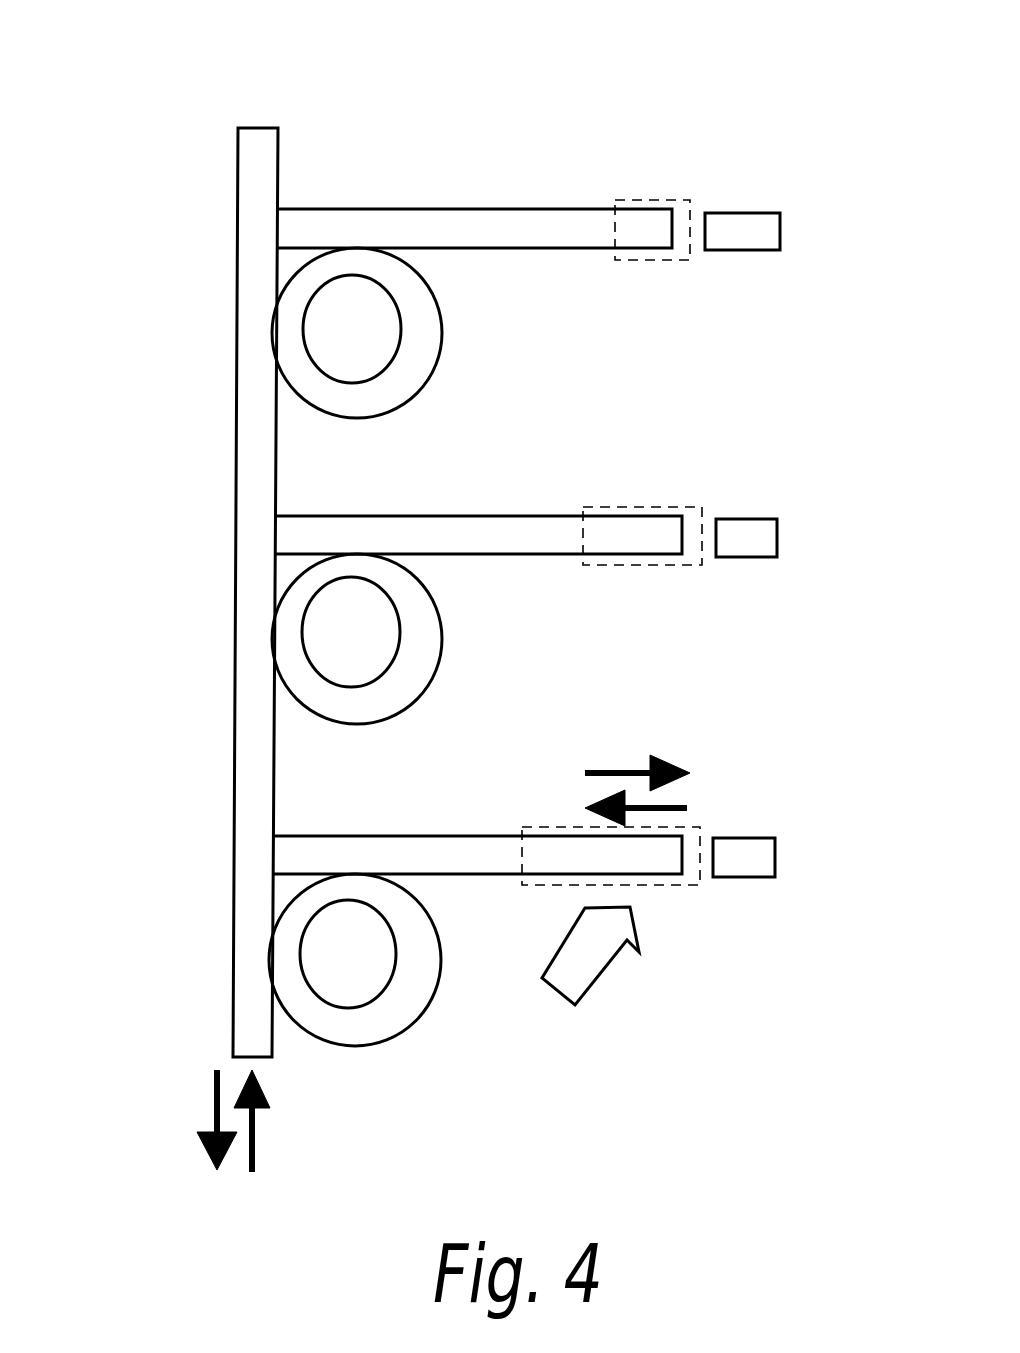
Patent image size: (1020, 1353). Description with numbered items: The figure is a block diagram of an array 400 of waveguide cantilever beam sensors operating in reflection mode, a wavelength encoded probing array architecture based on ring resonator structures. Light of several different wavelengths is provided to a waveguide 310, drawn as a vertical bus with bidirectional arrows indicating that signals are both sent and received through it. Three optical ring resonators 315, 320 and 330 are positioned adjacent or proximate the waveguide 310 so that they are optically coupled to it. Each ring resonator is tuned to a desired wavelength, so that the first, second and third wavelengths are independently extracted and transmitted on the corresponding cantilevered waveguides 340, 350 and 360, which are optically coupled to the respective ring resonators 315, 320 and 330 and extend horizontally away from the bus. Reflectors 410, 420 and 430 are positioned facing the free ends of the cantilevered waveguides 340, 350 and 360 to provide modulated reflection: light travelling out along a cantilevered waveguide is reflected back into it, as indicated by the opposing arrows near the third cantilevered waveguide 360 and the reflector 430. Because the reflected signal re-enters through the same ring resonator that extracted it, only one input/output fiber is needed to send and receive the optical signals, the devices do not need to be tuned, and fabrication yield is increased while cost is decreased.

The array 400 is at (222, 60).
The waveguide 310 is at (243, 1020).
The optical ring resonator 315 is at (412, 372).
The optical ring resonator 320 is at (408, 678).
The optical ring resonator 330 is at (293, 902).
The cantilevered waveguide 340 is at (322, 222).
The cantilevered waveguide 350 is at (318, 530).
The cantilevered waveguide 360 is at (318, 852).
The reflector 410 is at (727, 227).
The reflector 420 is at (739, 535).
The reflector 430 is at (738, 855).